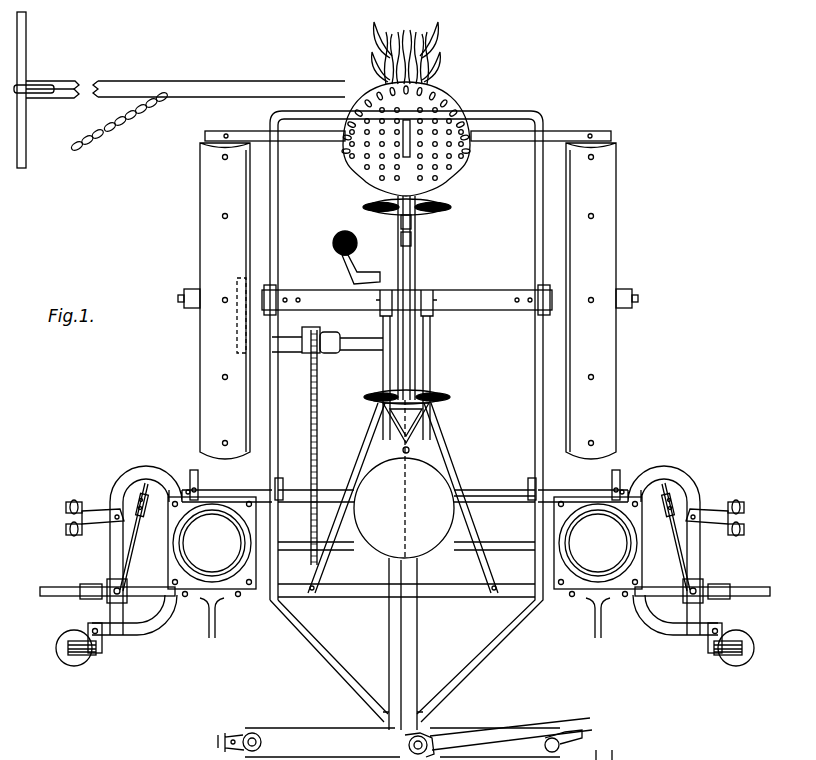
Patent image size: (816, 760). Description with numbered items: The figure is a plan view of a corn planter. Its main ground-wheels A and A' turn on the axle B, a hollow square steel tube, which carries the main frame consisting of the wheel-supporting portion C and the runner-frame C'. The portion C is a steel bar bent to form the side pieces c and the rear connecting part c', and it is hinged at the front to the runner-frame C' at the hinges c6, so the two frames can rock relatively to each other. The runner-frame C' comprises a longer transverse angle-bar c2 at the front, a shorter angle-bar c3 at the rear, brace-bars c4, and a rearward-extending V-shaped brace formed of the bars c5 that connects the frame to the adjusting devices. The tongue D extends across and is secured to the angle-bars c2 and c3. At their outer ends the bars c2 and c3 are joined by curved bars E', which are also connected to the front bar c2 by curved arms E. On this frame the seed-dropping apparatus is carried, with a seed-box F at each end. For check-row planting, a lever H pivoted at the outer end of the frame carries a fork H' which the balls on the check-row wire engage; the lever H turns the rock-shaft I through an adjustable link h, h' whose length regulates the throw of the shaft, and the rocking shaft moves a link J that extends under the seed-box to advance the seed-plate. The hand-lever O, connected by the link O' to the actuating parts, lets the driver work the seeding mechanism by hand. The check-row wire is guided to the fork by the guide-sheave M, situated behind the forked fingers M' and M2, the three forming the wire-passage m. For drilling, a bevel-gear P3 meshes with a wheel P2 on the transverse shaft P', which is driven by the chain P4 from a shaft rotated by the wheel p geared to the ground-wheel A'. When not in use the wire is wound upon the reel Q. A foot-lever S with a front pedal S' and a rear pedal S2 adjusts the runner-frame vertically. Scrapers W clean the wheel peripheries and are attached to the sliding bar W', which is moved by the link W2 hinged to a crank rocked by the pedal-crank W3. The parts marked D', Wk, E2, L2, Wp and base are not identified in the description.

The pedal-crank W3 is at (46, 90).
The link W2 is at (207, 100).
The reel Q is at (420, 53).
The sliding bar W' is at (428, 139).
The wheel-supporting portion of main frame C is at (406, 416).
The side pieces c is at (406, 406).
The rear connecting part c' is at (406, 296).
The axle B is at (407, 293).
The ground-wheel A' is at (252, 295).
The ground-wheel A is at (554, 295).
The scrapers W is at (395, 124).
The rear pedal S2 is at (444, 208).
The shaft D' is at (428, 298).
The knob lever Wk is at (345, 231).
The wheel p is at (238, 306).
The transverse shaft P' is at (296, 333).
The wheel P2 is at (350, 332).
The clamp E2 is at (372, 340).
The foot-lever S is at (423, 378).
The front pedal S' is at (397, 389).
The chain P4 is at (317, 420).
The bevel-gear P3 is at (306, 522).
The V-shaped brace bars c5 is at (422, 428).
The rear angle-bar c3 is at (346, 498).
The front angle-bar c2 is at (460, 592).
The hinges c6 is at (425, 474).
The rock-shaft I is at (494, 484).
The link O' is at (515, 477).
The hand-lever O is at (580, 484).
The runner-frame C' is at (410, 513).
The tongue D is at (412, 644).
The brace-bars c4 is at (343, 645).
The base plate base is at (415, 739).
The curved bars E' is at (405, 552).
The curved arms E is at (647, 647).
The link J is at (198, 486).
The seed-box F is at (405, 567).
The stem L2 is at (403, 645).
The lever H is at (405, 585).
The fork H' is at (403, 578).
The adjustable link h' is at (405, 537).
The adjustable link h is at (402, 558).
The pulley Wp is at (66, 506).
The guide-sheave M is at (401, 643).
The forked finger M' is at (407, 673).
The forked finger M2 is at (78, 664).
The wire-passage m is at (62, 660).